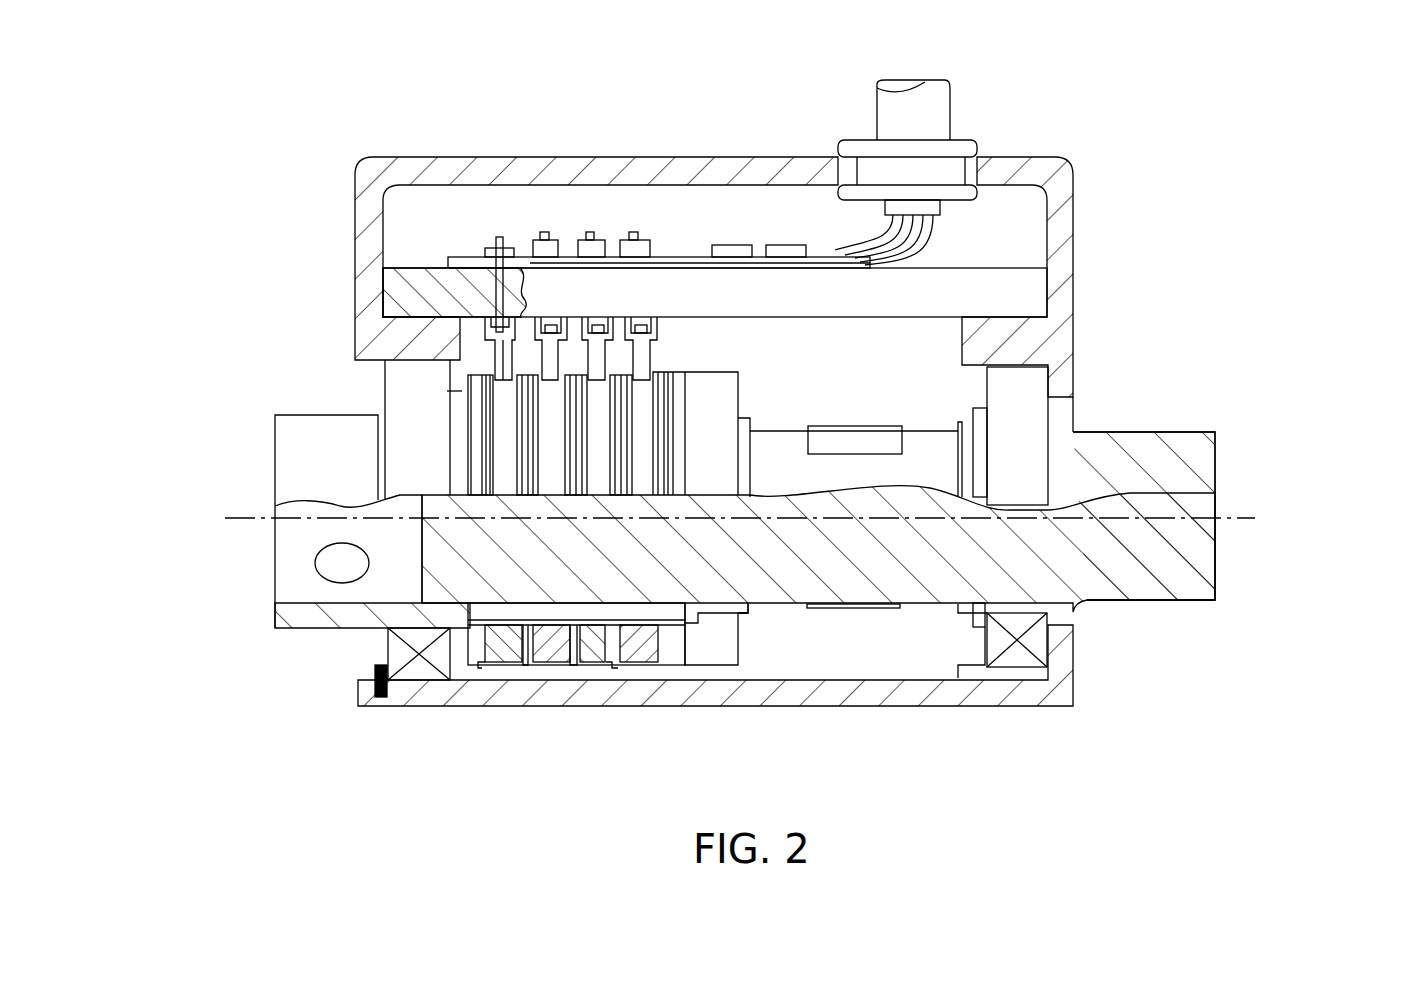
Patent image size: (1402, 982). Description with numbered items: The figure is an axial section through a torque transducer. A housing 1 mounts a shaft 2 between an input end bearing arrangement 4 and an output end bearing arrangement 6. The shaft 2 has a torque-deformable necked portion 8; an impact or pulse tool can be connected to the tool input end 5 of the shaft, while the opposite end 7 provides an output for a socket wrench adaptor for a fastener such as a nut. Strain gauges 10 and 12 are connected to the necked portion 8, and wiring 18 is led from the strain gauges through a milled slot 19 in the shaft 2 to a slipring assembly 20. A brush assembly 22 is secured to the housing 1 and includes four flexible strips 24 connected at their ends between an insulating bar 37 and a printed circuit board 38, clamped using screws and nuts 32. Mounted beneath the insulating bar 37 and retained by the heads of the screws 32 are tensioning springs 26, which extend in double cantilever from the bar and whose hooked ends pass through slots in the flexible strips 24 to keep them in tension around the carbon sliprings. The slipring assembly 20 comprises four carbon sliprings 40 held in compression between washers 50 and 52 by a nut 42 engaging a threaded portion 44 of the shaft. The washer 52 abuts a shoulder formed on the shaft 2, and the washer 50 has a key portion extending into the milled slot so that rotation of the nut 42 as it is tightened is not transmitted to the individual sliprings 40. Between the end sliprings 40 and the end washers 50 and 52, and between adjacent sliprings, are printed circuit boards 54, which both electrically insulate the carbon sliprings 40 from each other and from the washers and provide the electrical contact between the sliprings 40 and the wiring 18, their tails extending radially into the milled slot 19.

The housing 1 is at (410, 713).
The shaft 2 is at (1038, 565).
The input end bearing arrangement 4 is at (417, 650).
The tool input end 5 is at (268, 565).
The output end bearing arrangement 6 is at (1012, 655).
The end 7 is at (1222, 463).
The necked portion 8 is at (935, 455).
The strain gauge 10 is at (858, 426).
The strain gauge 12 is at (858, 609).
The wiring 18 is at (783, 432).
The milled slot 19 is at (505, 613).
The slipring assembly 20 is at (647, 664).
The brush assembly 22 is at (533, 232).
The flexible strip 24 is at (503, 362).
The tensioning spring 26 is at (483, 328).
The screws and nuts 32 is at (548, 226).
The insulating bar 37 is at (1017, 292).
The printed circuit board 38 is at (678, 248).
The carbon slipring 40 is at (604, 664).
The nut 42 is at (733, 664).
The threaded portion 44 is at (745, 416).
The washer 50 is at (674, 386).
The washer 52 is at (473, 662).
The printed circuit board 54 is at (575, 664).